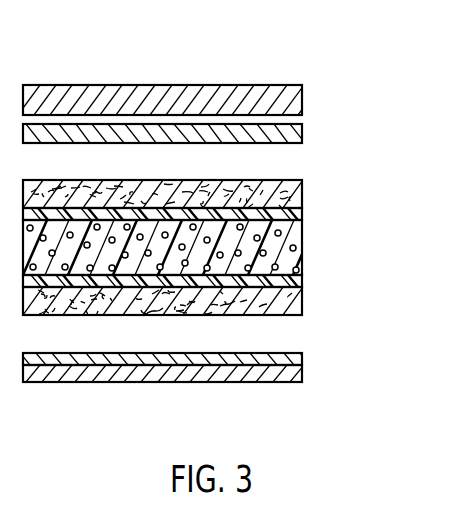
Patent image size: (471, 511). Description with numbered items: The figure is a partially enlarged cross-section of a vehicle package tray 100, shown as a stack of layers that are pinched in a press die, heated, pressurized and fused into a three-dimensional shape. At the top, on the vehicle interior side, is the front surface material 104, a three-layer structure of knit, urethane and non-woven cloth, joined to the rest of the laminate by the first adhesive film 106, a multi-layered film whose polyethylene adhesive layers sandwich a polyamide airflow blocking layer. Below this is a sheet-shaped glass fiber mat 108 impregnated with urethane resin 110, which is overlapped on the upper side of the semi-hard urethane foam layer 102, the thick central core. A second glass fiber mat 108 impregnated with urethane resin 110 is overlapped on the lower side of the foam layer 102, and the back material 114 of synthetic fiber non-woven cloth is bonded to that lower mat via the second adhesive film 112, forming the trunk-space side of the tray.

The vehicle package tray 100 is at (265, 72).
The semi-hard urethane foam layer 102 is at (302, 258).
The front surface material 104 is at (302, 100).
The first adhesive film 106 is at (302, 135).
The glass fiber mat 108 is at (302, 197).
The urethane resin 110 is at (302, 217).
The second adhesive film 112 is at (302, 360).
The back material 114 is at (302, 374).